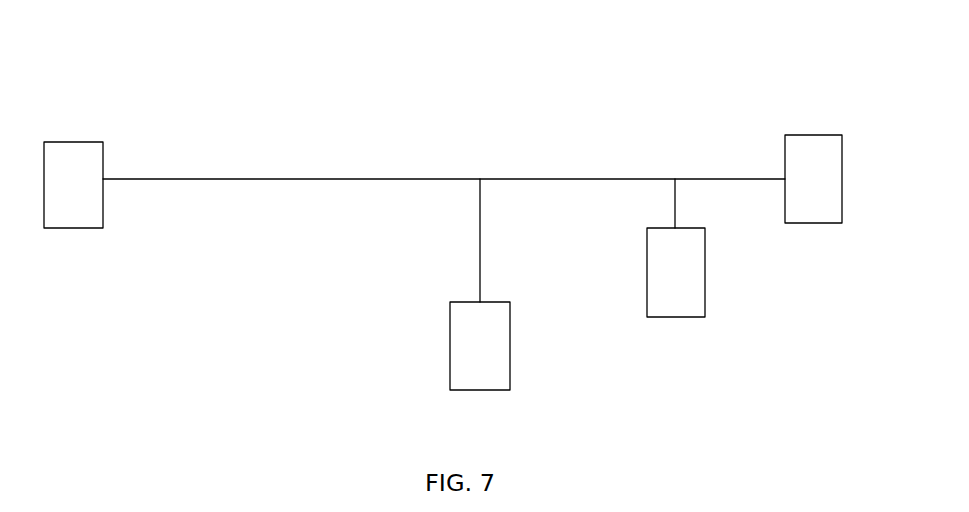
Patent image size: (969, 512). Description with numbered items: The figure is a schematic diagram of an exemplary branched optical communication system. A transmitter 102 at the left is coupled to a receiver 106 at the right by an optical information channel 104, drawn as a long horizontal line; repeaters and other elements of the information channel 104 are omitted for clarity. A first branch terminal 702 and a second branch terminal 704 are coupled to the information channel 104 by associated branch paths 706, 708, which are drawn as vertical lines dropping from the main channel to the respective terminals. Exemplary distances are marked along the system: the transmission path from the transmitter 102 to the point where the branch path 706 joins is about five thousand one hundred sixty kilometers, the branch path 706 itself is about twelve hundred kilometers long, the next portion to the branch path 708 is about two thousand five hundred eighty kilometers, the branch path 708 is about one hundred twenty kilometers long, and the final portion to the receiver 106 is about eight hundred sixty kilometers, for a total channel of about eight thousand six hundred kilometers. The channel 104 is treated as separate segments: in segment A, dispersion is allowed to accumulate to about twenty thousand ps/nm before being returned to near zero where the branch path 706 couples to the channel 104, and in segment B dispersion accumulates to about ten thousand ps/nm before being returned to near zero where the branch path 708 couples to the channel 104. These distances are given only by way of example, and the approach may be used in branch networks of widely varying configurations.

The transmitter 102 is at (85, 142).
The optical information channel 104 is at (421, 173).
The receiver 106 is at (820, 135).
The first branch terminal 702 is at (450, 345).
The second branch terminal 704 is at (670, 317).
The branch path 706 is at (478, 268).
The branch path 708 is at (677, 200).
The segment A is at (318, 110).
The segment B is at (573, 124).